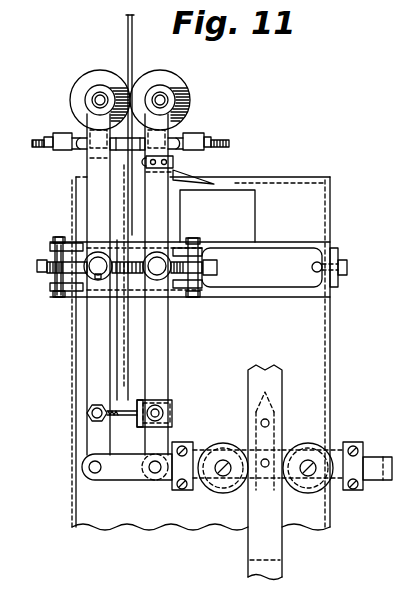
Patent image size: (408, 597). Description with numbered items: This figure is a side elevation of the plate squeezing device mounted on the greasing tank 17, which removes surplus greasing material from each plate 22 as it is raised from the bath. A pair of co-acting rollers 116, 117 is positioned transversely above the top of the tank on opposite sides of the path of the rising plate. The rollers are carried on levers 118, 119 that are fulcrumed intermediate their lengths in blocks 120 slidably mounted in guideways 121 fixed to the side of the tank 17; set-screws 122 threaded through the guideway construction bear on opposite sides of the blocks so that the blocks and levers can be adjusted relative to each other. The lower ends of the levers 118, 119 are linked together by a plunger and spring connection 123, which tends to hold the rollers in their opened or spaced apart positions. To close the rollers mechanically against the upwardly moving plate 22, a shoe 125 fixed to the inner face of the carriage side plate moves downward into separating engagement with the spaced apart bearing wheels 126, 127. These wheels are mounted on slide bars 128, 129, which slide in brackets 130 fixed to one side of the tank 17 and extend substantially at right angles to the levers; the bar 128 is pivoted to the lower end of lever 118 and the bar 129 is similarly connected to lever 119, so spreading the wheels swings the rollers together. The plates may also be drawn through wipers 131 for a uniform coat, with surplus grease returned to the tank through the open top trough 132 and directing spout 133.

The greasing tank 17 is at (201, 353).
The plate 22 is at (127, 29).
The roller 116 is at (87, 81).
The roller 117 is at (178, 83).
The lever 118 is at (92, 356).
The lever 119 is at (163, 358).
The block 120 is at (84, 250).
The guideway 121 is at (287, 248).
The set-screw 122 is at (50, 266).
The plunger and spring connection 123 is at (125, 420).
The shoe 125 is at (281, 394).
The bearing wheel 126 is at (227, 443).
The bearing wheel 127 is at (305, 443).
The slide bar 128 is at (122, 478).
The slide bar 129 is at (163, 453).
The bracket 130 is at (187, 492).
The wiper 131 is at (138, 146).
The open top trough 132 is at (176, 163).
The directing spout 133 is at (216, 182).